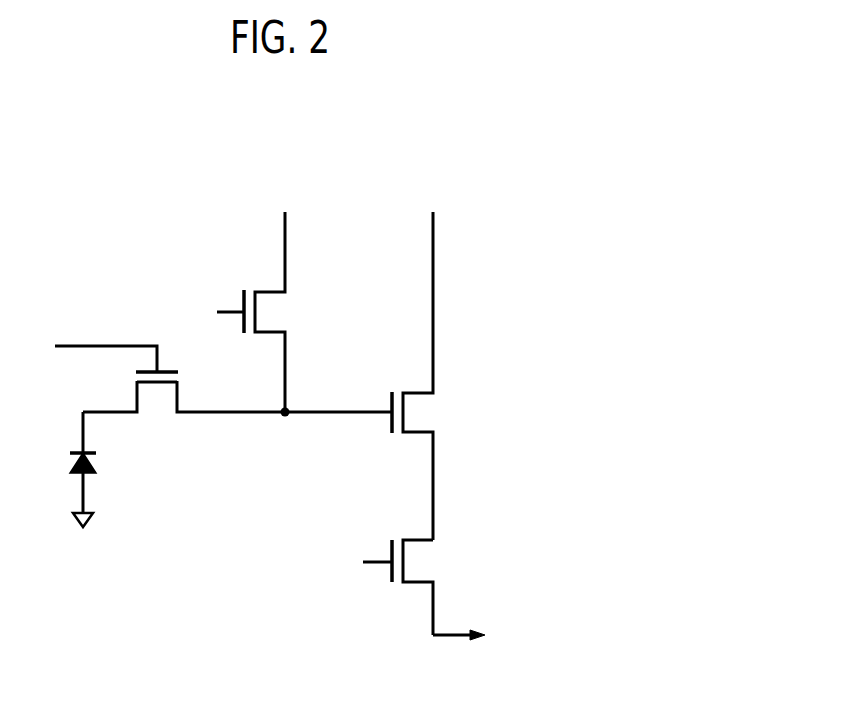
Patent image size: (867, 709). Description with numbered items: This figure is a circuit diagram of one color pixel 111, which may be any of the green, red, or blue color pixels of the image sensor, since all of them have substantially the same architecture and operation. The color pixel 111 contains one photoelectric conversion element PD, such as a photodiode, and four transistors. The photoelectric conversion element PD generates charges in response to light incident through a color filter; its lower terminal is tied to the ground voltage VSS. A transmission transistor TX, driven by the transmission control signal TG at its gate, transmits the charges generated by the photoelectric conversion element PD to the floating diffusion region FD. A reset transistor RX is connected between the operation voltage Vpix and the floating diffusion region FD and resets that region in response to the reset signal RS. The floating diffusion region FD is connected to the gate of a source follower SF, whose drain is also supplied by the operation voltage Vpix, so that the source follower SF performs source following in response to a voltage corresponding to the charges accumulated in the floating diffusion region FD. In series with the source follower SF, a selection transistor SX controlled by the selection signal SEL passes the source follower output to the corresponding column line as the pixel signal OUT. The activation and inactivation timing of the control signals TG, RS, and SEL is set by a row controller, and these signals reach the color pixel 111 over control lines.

The color pixel 111 is at (474, 170).
The transmission transistor TX is at (184, 407).
The transmission control signal TG is at (89, 353).
The photoelectric conversion element PD is at (99, 462).
The ground voltage VSS is at (104, 520).
The reset transistor RX is at (278, 312).
The reset signal RS is at (216, 312).
The operation voltage Vpix is at (359, 198).
The floating diffusion region FD is at (332, 426).
The source follower SF is at (424, 376).
The selection transistor SX is at (425, 587).
The selection signal SEL is at (360, 562).
The pixel signal OUT is at (484, 635).